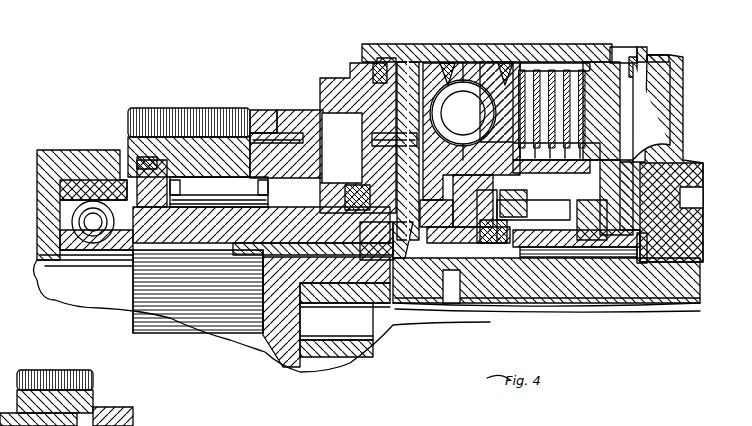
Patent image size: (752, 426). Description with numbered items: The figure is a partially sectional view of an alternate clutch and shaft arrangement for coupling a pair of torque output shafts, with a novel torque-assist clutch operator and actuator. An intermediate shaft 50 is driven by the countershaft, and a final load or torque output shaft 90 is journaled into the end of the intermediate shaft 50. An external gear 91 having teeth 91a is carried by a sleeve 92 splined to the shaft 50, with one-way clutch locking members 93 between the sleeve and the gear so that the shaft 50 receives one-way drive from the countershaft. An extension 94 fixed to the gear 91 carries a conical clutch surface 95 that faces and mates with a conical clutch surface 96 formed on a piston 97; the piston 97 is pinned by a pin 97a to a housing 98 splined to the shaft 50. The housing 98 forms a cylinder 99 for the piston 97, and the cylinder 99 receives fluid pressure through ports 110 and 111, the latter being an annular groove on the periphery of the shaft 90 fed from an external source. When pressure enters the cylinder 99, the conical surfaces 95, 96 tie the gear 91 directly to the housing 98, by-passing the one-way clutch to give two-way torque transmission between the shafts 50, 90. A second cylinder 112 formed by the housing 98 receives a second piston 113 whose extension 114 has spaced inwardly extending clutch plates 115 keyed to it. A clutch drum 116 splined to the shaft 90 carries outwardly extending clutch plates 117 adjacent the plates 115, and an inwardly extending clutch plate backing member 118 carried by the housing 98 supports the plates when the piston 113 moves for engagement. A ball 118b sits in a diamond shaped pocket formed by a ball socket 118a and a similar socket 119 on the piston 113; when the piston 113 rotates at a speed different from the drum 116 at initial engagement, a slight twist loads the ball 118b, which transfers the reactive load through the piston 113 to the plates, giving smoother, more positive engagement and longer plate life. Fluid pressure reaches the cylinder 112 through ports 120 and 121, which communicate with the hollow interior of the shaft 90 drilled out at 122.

The intermediate shaft 50 is at (93, 298).
The final load or torque output shaft 90 is at (690, 280).
The external gear 91 is at (130, 148).
The teeth 91a is at (143, 122).
The sleeve 92 is at (165, 250).
The one-way clutch locking members 93 is at (197, 178).
The extension 94 is at (255, 112).
The conical clutch surface 95 is at (318, 88).
The conical clutch surface 96 is at (373, 137).
The piston 97 is at (340, 75).
The pin 97a is at (436, 209).
The housing 98 is at (372, 58).
The cylinder 99 is at (406, 60).
The port 110 is at (390, 208).
The port 111 is at (413, 283).
The second cylinder 112 is at (492, 216).
The second piston 113 is at (548, 75).
The extension 114 is at (573, 70).
The clutch plates 115 is at (603, 52).
The clutch drum 116 is at (533, 205).
The clutch plates 117 is at (593, 125).
The clutch plate backing member 118 is at (620, 127).
The ball socket 118a is at (455, 83).
The ball 118b is at (466, 83).
The seal 119 is at (505, 64).
The port 120 is at (485, 300).
The port 121 is at (470, 300).
The drilled-out interior 122 is at (345, 325).